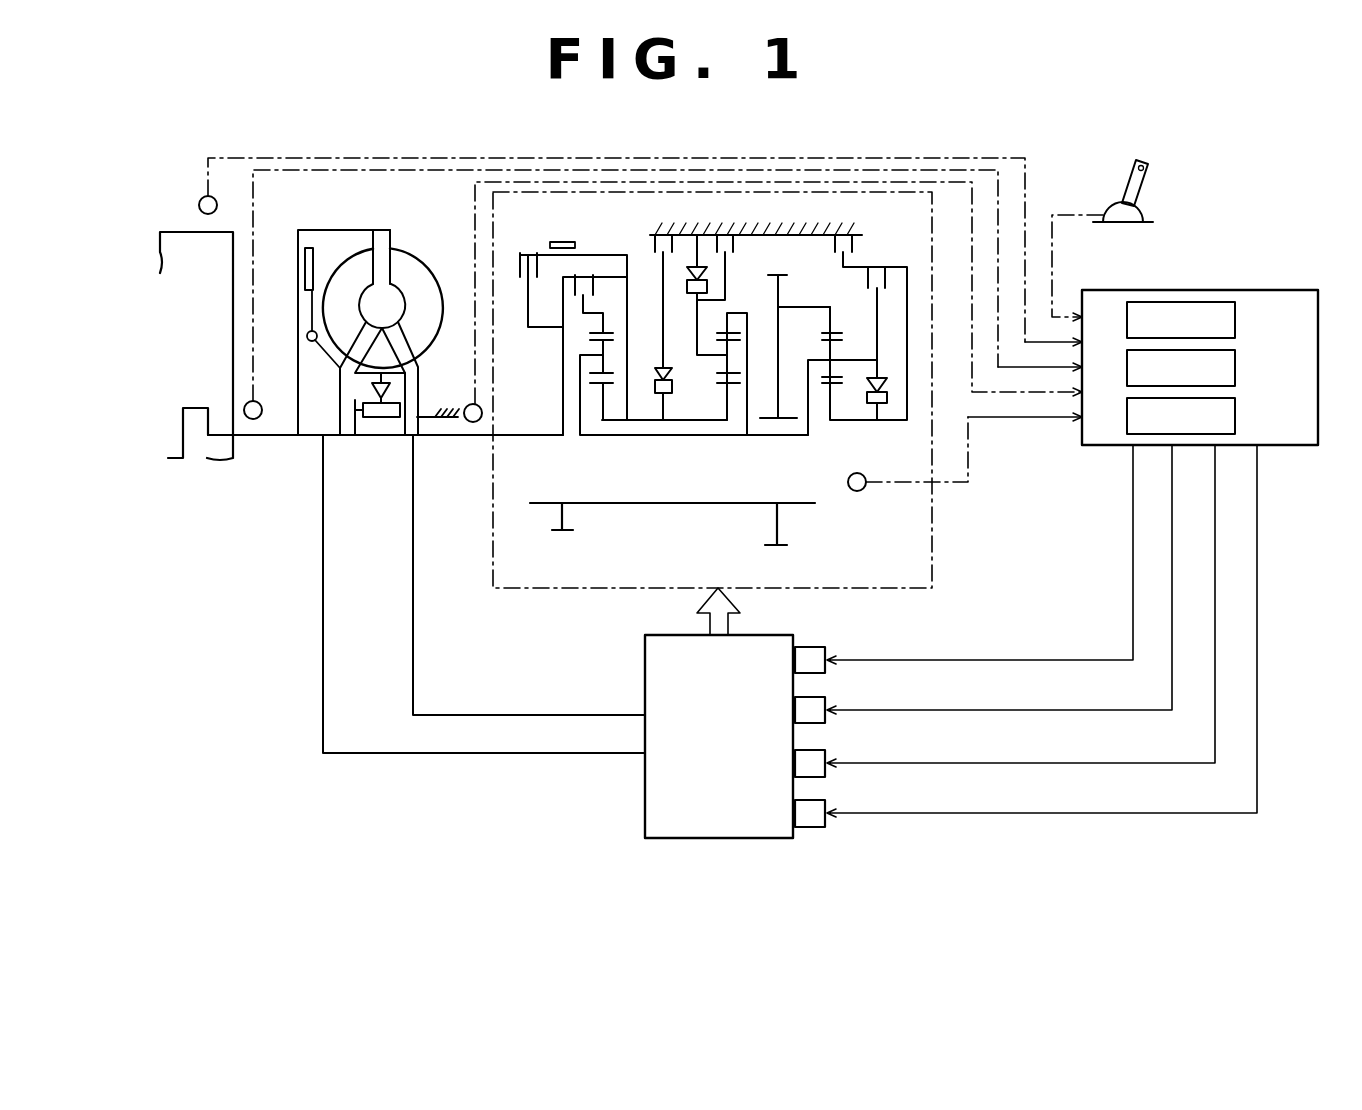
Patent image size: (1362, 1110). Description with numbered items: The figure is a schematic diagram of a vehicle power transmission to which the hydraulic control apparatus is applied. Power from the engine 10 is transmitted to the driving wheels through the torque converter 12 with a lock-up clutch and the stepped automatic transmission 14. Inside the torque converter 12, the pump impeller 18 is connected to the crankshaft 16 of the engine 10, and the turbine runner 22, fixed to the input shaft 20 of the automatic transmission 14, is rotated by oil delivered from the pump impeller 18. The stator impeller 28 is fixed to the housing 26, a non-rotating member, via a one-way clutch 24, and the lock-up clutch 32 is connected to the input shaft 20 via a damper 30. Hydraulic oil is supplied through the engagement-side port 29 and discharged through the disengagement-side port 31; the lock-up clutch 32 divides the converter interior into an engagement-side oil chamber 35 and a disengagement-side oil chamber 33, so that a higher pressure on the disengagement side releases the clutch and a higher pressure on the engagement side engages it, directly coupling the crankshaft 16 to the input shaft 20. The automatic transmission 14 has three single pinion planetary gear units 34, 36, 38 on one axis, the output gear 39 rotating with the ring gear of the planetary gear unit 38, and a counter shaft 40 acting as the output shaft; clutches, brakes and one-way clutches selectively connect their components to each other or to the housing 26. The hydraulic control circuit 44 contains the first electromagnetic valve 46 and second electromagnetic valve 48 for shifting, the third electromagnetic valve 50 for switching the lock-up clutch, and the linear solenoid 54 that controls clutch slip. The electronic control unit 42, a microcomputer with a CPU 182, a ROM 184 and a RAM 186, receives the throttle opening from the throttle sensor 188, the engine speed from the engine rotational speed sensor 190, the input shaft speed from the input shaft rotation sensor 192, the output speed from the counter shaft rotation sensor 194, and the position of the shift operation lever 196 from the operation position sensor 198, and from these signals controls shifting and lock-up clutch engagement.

The engine 10 is at (212, 318).
The torque converter 12 is at (383, 218).
The stepped automatic transmission 14 is at (862, 224).
The crankshaft 16 is at (283, 437).
The pump impeller 18 is at (390, 243).
The input shaft 20 is at (516, 437).
The turbine runner 22 is at (350, 272).
The one-way clutch 24 is at (357, 405).
The housing 26 is at (434, 410).
The stator impeller 28 is at (373, 366).
The engagement-side port 29 is at (410, 440).
The damper 30 is at (307, 338).
The disengagement-side port 31 is at (327, 440).
The lock-up clutch 32 is at (306, 282).
The disengagement-side oil chamber 33 is at (312, 428).
The planetary gear unit 34 is at (603, 430).
The engagement-side oil chamber 35 is at (340, 240).
The planetary gear unit 36 is at (730, 430).
The planetary gear unit 38 is at (828, 430).
The output gear 39 is at (784, 278).
The counter shaft 40 is at (668, 505).
The electronic control unit 42 is at (1097, 303).
The hydraulic control circuit 44 is at (659, 672).
The first electromagnetic valve 46 is at (811, 652).
The second electromagnetic valve 48 is at (811, 702).
The third electromagnetic valve 50 is at (811, 755).
The linear solenoid 54 is at (811, 805).
The CPU 182 is at (1235, 320).
The ROM 184 is at (1235, 367).
The RAM 186 is at (1235, 415).
The throttle sensor 188 is at (199, 203).
The engine rotational speed sensor 190 is at (245, 404).
The input shaft rotation sensor 192 is at (471, 422).
The counter shaft rotation sensor 194 is at (857, 491).
The shift operation lever 196 is at (1143, 182).
The operation position sensor 198 is at (1130, 225).